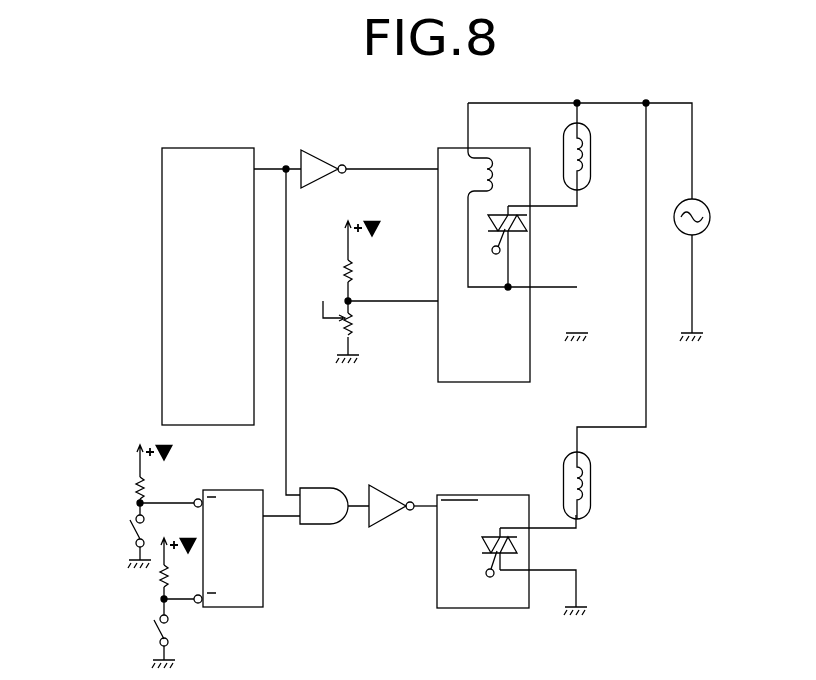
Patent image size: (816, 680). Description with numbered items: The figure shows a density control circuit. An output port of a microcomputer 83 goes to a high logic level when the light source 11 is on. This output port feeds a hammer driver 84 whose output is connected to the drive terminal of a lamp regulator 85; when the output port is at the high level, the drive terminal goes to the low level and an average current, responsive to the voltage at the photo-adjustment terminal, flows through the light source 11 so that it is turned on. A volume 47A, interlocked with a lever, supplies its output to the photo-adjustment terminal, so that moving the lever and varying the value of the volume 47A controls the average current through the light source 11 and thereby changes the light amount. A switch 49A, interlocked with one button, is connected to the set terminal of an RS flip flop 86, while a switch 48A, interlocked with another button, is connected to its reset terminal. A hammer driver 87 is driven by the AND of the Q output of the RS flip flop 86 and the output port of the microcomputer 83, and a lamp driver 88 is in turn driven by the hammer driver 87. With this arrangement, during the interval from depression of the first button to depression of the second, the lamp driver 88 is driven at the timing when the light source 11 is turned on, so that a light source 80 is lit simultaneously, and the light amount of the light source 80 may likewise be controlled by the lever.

The microcomputer 83 is at (231, 148).
The hammer driver 84 is at (326, 161).
The lamp regulator 85 is at (522, 137).
The light source 11 is at (592, 172).
The volume 47A is at (358, 323).
The switch 49A is at (130, 524).
The switch 48A is at (152, 628).
The RS flip flop 86 is at (240, 607).
The hammer driver 87 is at (392, 497).
The light source 80 is at (592, 490).
The lamp driver 88 is at (460, 608).